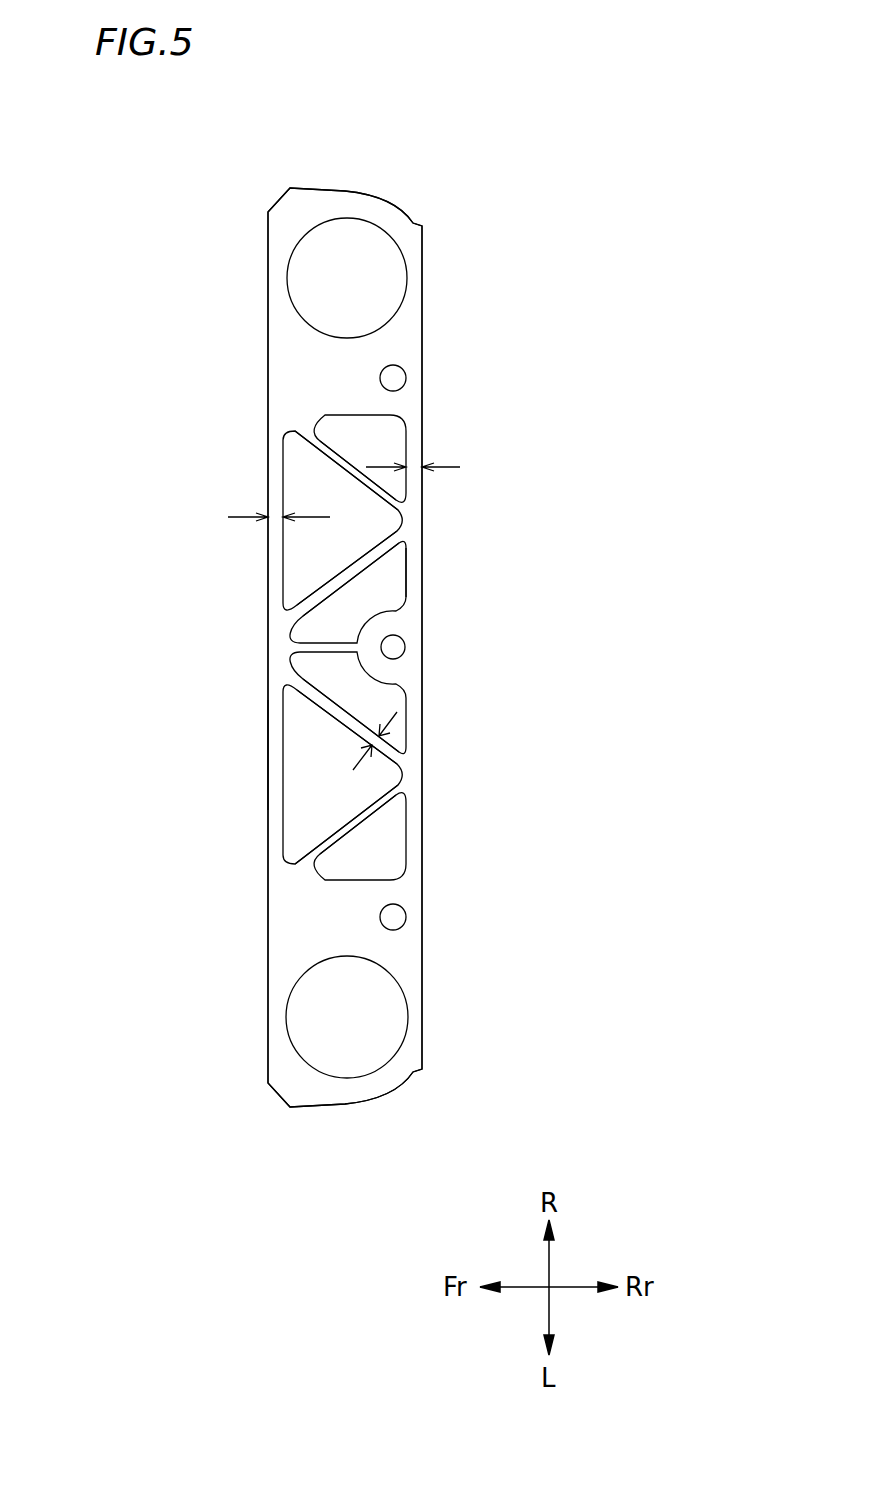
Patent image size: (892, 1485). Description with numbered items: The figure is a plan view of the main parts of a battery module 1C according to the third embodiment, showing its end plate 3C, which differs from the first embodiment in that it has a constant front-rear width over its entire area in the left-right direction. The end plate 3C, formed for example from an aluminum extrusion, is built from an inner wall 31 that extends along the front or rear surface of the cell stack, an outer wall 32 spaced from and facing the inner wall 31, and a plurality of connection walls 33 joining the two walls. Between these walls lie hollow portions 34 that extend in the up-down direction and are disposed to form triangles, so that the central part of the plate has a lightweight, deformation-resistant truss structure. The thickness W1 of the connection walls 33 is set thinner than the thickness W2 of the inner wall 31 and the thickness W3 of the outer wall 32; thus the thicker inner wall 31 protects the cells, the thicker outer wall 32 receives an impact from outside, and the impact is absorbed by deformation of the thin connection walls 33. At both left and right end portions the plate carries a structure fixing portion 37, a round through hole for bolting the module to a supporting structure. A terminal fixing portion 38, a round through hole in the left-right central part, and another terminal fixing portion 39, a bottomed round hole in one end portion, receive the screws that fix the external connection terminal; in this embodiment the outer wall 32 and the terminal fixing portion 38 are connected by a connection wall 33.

The battery module 1C is at (430, 160).
The end plate 3C is at (345, 647).
The inner wall 31 is at (390, 634).
The outer wall 32 is at (267, 753).
The connection wall 33 is at (378, 556).
The hollow portion 34 is at (346, 417).
The structure fixing portion 37 is at (326, 238).
The terminal fixing portion 38 is at (406, 568).
The terminal fixing portion 39 is at (380, 379).
The thickness of the connection walls W1 is at (408, 757).
The thickness of the inner wall W2 is at (412, 466).
The thickness of the outer wall W3 is at (275, 522).